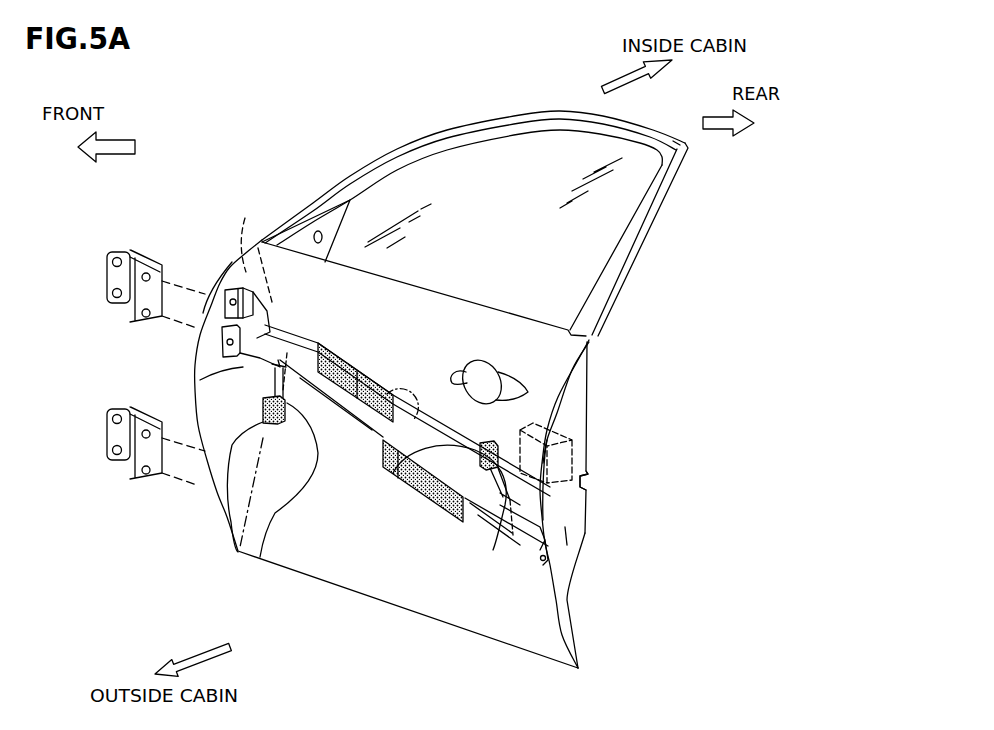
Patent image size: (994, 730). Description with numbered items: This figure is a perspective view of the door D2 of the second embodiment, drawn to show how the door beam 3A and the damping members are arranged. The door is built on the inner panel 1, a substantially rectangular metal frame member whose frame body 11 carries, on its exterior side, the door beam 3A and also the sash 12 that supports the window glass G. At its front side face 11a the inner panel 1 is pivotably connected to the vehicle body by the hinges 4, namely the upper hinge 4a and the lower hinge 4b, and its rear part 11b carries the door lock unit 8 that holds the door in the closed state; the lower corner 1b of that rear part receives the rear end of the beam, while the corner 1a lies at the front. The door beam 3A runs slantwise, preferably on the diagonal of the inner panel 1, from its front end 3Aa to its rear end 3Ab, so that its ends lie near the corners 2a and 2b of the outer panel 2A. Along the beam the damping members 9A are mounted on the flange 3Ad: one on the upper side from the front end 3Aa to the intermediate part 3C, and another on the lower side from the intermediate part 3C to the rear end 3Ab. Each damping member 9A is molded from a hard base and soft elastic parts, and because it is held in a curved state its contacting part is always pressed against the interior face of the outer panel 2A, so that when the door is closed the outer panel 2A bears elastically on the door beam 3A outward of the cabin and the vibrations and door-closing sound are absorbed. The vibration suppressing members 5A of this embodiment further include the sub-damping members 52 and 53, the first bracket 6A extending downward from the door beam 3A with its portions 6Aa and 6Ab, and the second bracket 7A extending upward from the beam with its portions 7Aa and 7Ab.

The inner panel 1 is at (578, 375).
The front end of inner panel 1a is at (246, 234).
The lower corner of the rear end 1b is at (566, 545).
The outer panel 2A is at (538, 613).
The corner of the outer panel 2a is at (259, 242).
The corner of the outer panel 2b is at (567, 655).
The door beam 3A is at (513, 500).
The front end 3Aa is at (233, 290).
The rear end 3Ab is at (556, 545).
The flange 3Ad is at (347, 413).
The intermediate part 3C is at (417, 407).
The hinge 4 is at (128, 251).
The upper hinge 4a is at (108, 272).
The lower hinge 4b is at (108, 433).
The vibration suppressing members 5A is at (257, 383).
The first bracket 6A is at (262, 556).
The front bracket pad 6Aa is at (285, 412).
The front bracket fastening portion 6Ab is at (288, 352).
The second bracket 7A is at (513, 477).
The rear bracket pad 7Aa is at (498, 442).
The rear bracket lower portion 7Ab is at (518, 535).
The door lock unit 8 is at (572, 427).
The damping member 9A is at (358, 380).
The frame body 11 is at (574, 493).
The front side face 11a is at (203, 367).
The rear part 11b is at (567, 520).
The sash 12 is at (627, 238).
The sub-damping member 52 is at (232, 526).
The sub-damping member 53 is at (418, 474).
The window glass G is at (453, 184).
The door D2 is at (666, 206).